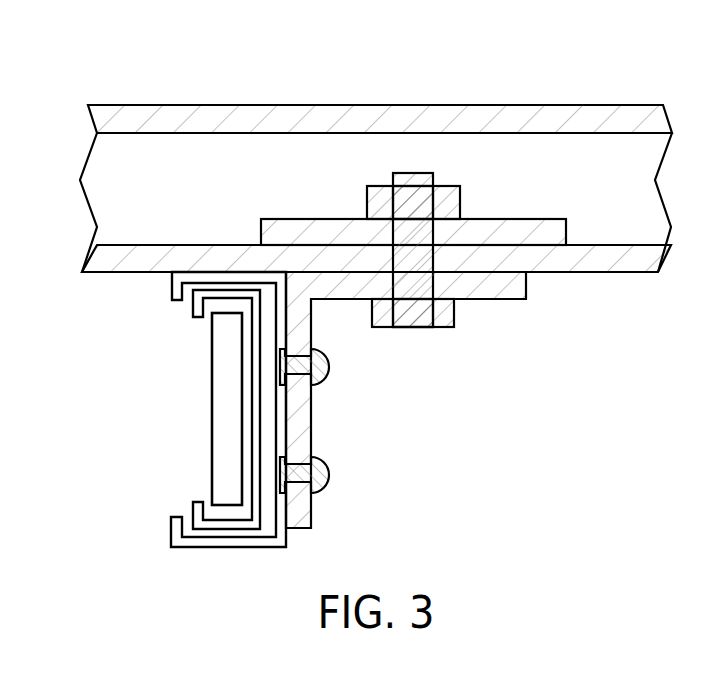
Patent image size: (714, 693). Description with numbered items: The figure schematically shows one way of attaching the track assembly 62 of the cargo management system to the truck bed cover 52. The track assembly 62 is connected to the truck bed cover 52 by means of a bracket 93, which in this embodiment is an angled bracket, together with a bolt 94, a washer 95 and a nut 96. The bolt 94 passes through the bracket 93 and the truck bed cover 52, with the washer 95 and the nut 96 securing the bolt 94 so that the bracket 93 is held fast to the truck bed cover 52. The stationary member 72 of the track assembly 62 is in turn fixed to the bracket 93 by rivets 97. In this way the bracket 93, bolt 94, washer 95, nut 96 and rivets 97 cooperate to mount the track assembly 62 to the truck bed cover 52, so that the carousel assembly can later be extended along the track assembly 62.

The truck bed cover 52 is at (376, 136).
The track assembly 62 is at (165, 440).
The stationary member 72 is at (253, 548).
The bracket 93 is at (335, 415).
The bolt 94 is at (455, 318).
The washer 95 is at (568, 231).
The nut 96 is at (462, 197).
The rivets 97 is at (326, 477).